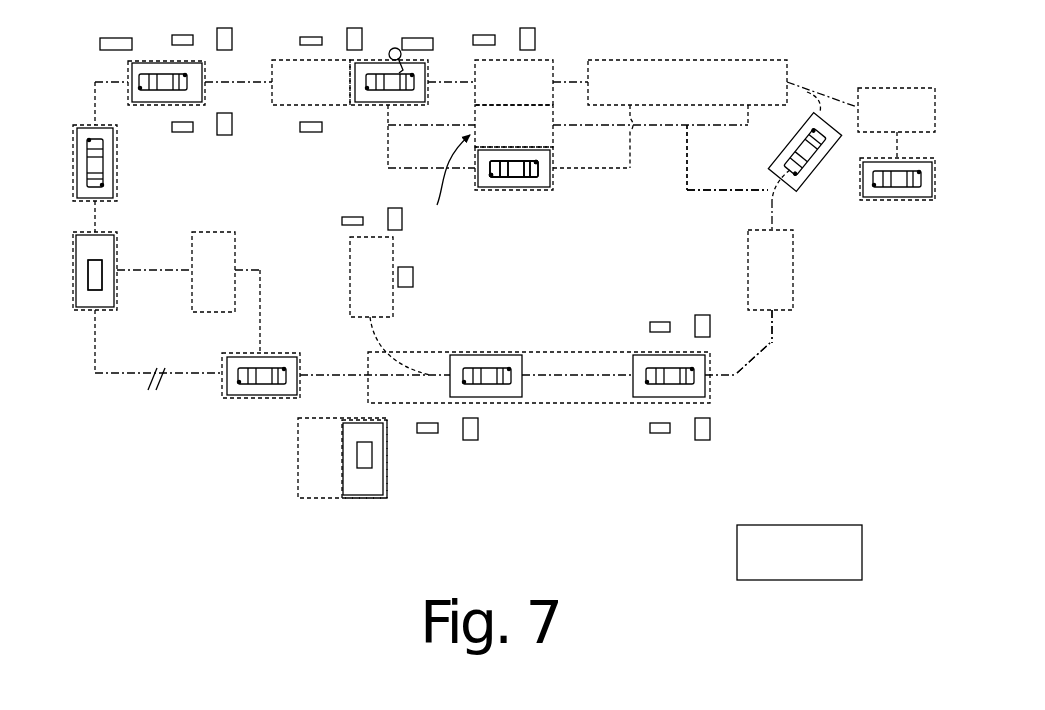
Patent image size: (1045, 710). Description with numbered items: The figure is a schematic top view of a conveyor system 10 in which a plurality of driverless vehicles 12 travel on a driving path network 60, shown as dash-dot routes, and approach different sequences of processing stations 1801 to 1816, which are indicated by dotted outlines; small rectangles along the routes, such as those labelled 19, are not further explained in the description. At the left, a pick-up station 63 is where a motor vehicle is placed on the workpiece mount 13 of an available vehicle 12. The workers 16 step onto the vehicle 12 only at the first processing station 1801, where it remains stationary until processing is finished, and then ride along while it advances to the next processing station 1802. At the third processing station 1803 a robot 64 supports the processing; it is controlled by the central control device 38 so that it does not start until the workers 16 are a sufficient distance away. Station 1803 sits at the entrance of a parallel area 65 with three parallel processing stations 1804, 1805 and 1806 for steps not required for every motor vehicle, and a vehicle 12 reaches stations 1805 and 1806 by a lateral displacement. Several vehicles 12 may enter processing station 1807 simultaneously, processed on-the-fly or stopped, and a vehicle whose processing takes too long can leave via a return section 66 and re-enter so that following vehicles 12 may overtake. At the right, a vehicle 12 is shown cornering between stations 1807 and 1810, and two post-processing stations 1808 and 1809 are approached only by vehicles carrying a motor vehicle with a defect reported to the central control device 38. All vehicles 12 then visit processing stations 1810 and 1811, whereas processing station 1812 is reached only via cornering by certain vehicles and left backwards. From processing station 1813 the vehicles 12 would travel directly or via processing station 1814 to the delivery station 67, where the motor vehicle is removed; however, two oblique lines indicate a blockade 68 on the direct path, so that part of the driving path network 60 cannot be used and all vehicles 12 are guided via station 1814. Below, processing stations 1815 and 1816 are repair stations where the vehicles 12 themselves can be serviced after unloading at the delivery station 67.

The conveyor system 10 is at (168, 466).
The vehicle 12 is at (812, 182).
The workpiece mount 13 is at (90, 277).
The workers 16 is at (488, 174).
The parking spaces 19 is at (119, 43).
The central control device 38 is at (808, 525).
The driving path network 60 is at (763, 348).
The pick-up station 63 is at (117, 173).
The robot 64 is at (392, 50).
The parallel area 65 is at (438, 184).
The return section 66 is at (708, 190).
The delivery station 67 is at (117, 248).
The blockade 68 is at (147, 393).
The first processing station 1801 is at (142, 105).
The processing station 1802 is at (278, 105).
The third processing station 1803 is at (365, 105).
The parallel processing station 1804 is at (542, 58).
The parallel processing station 1805 is at (553, 138).
The parallel processing station 1806 is at (553, 182).
The processing station 1807 is at (725, 43).
The post-processing station 1808 is at (873, 88).
The post-processing station 1809 is at (873, 200).
The processing station 1810 is at (793, 277).
The processing station 1811 is at (617, 350).
The processing station 1812 is at (393, 308).
The processing station 1813 is at (285, 353).
The processing station 1814 is at (235, 248).
The repair station 1815 is at (298, 462).
The repair station 1816 is at (387, 467).